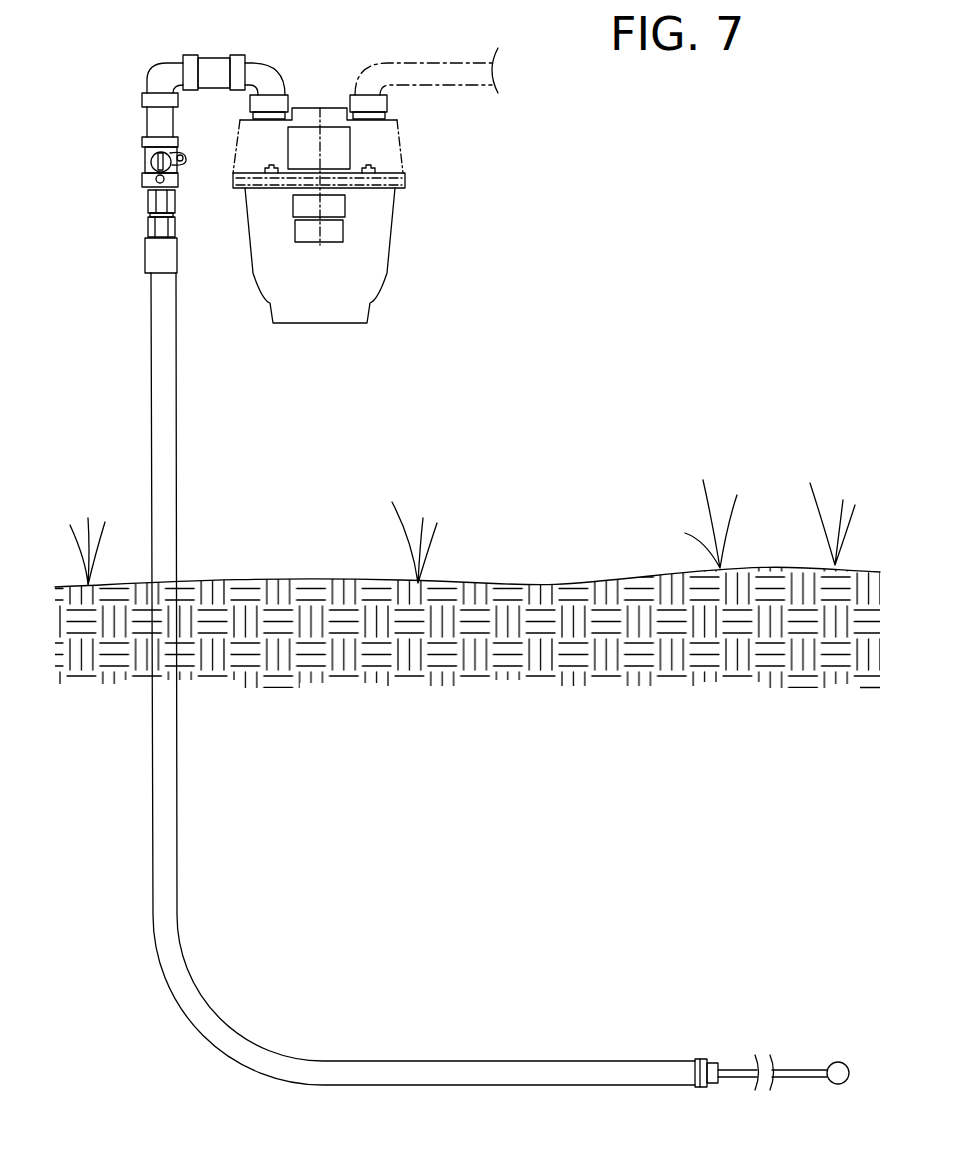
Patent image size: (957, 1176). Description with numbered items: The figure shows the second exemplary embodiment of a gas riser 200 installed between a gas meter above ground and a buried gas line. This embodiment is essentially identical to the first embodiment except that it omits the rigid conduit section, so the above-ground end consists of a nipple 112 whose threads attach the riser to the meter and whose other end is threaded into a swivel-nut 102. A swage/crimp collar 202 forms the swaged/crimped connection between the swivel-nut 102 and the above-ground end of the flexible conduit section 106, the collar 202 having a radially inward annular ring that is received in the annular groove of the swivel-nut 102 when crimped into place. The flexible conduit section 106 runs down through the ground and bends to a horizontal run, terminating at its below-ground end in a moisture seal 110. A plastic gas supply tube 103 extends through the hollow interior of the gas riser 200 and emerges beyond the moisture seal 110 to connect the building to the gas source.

The gas riser 200 is at (212, 447).
The nipple 112 is at (150, 202).
The swivel-nut 102 is at (150, 220).
The swage/crimp collar 202 is at (150, 258).
The flexible conduit section 106 is at (167, 741).
The moisture seal 110 is at (698, 1088).
The plastic gas supply tube 103 is at (737, 1068).